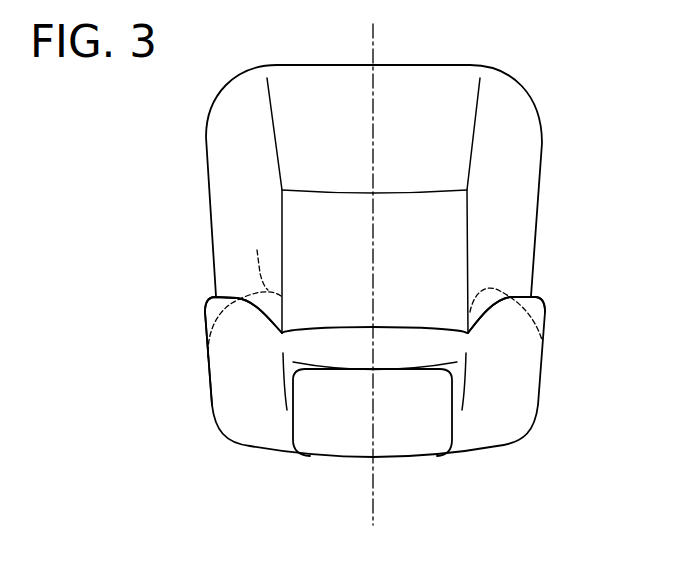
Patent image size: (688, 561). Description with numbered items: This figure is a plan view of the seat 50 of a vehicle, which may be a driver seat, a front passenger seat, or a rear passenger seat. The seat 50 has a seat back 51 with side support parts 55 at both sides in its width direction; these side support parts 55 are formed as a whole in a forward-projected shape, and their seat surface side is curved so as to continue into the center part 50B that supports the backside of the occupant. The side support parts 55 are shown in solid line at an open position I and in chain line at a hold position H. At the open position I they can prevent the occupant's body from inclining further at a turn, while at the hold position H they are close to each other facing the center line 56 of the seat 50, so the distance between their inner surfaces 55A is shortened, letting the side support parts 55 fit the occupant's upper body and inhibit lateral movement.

The seat 50 is at (252, 447).
The center part 50B is at (412, 323).
The seat back 51 is at (505, 443).
The side support parts 55 is at (203, 296).
The inner surfaces 55A is at (275, 313).
The center line 56 is at (375, 40).
The hold position H is at (261, 258).
The open position I is at (203, 318).